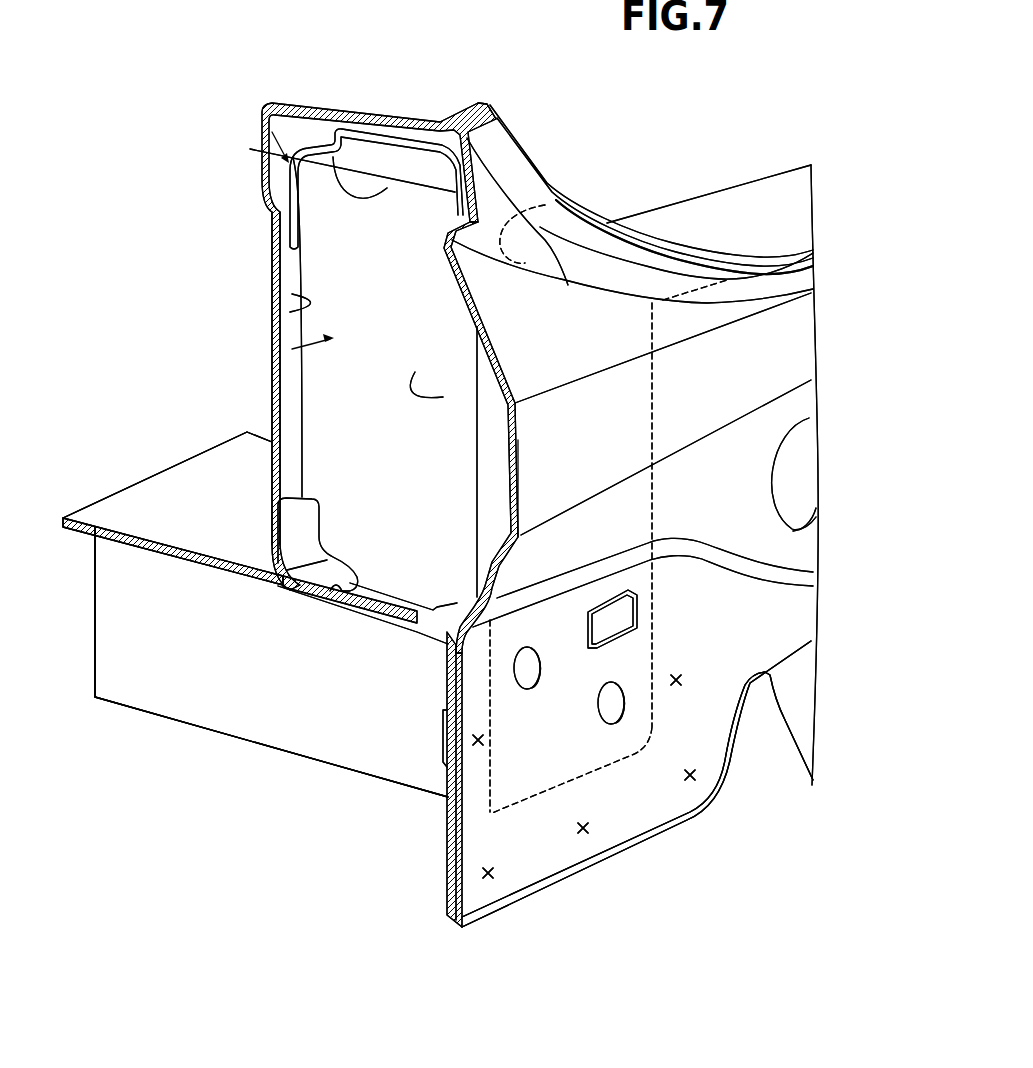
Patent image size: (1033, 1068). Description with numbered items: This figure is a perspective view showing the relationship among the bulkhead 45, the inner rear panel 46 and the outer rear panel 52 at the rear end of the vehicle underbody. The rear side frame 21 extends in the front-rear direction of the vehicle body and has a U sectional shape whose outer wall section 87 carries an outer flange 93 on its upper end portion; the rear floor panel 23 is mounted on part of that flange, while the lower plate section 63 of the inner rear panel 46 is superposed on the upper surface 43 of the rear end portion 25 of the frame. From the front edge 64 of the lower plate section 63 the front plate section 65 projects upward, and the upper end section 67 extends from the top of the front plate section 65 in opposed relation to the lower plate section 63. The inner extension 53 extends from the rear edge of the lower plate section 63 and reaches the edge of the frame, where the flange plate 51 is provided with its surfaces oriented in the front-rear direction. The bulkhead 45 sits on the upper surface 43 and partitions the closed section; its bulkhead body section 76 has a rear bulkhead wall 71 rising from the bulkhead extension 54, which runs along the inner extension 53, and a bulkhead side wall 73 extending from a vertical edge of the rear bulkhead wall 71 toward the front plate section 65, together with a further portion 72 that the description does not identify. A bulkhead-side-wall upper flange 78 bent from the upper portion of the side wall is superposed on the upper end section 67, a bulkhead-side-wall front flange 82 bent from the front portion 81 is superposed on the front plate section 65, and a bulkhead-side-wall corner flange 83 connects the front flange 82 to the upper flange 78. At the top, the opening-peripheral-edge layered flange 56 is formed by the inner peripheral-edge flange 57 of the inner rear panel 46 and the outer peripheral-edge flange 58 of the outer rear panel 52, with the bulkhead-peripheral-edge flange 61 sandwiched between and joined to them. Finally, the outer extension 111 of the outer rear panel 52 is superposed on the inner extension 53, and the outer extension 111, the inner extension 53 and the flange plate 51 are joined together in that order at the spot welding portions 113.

The rear side frame 21 is at (152, 448).
The rear floor panel 23 is at (243, 480).
The rear end portion 25 is at (377, 652).
The upper surface 43 is at (267, 577).
The bulkhead 45 is at (257, 150).
The inner rear panel 46 is at (272, 226).
The flange plate 51 is at (447, 862).
The outer rear panel 52 is at (797, 352).
The inner extension 53 is at (544, 893).
The bulkhead extension 54 is at (650, 727).
The opening-peripheral-edge layered flange 56 is at (783, 245).
The inner peripheral-edge flange 57 is at (479, 102).
The outer peripheral-edge flange 58 is at (501, 160).
The bulkhead-peripheral-edge flange 61 is at (703, 255).
The lower plate section 63 is at (318, 583).
The front edge 64 is at (305, 580).
The front plate section 65 is at (300, 512).
The upper end section 67 is at (388, 103).
The rear bulkhead wall 71 is at (495, 462).
The bent portion 72 is at (490, 430).
The bulkhead side wall 73 is at (457, 393).
The bulkhead body section 76 is at (270, 347).
The bulkhead-side-wall upper flange 78 is at (428, 130).
The front portion 81 is at (317, 268).
The bulkhead-side-wall front flange 82 is at (273, 313).
The bulkhead-side-wall corner flange 83 is at (293, 157).
The outer wall section 87 is at (103, 653).
The outer flange 93 is at (130, 552).
The outer extension 111 is at (567, 740).
The spot welding portion 113 is at (488, 880).